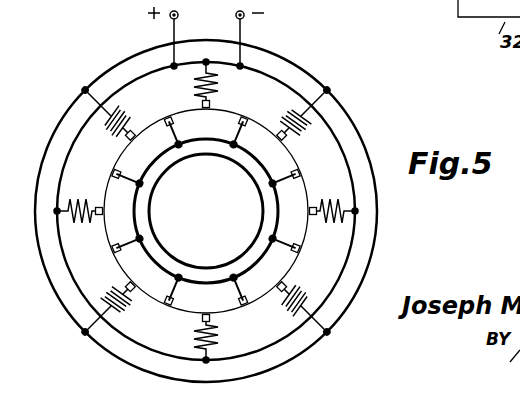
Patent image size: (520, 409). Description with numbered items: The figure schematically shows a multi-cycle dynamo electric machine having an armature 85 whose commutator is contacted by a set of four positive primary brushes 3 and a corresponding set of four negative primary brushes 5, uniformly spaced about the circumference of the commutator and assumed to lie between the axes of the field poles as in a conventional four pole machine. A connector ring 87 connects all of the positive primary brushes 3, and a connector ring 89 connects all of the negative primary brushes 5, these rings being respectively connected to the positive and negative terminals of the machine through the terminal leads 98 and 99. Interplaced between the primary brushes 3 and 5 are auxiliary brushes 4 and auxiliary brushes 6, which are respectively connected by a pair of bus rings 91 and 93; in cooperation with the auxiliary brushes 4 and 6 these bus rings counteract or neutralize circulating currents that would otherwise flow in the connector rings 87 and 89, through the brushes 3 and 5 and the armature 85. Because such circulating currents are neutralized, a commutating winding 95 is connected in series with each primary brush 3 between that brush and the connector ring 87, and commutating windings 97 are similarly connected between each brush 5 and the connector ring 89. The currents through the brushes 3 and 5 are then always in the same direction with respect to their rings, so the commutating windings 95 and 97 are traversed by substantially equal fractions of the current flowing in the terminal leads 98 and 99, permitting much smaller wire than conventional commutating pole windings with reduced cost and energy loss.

The positive primary brushes 3 is at (206, 211).
The auxiliary brushes 4 is at (206, 211).
The negative primary brushes 5 is at (205, 211).
The auxiliary brushes 6 is at (206, 210).
The armature 85 is at (262, 119).
The connector ring 87 is at (338, 284).
The connector ring 89 is at (377, 248).
The bus ring 91 is at (208, 141).
The bus ring 93 is at (262, 206).
The commutating winding 95 is at (196, 330).
The commutating windings 97 is at (278, 305).
The terminal lead 98 is at (172, 30).
The terminal lead 99 is at (247, 26).